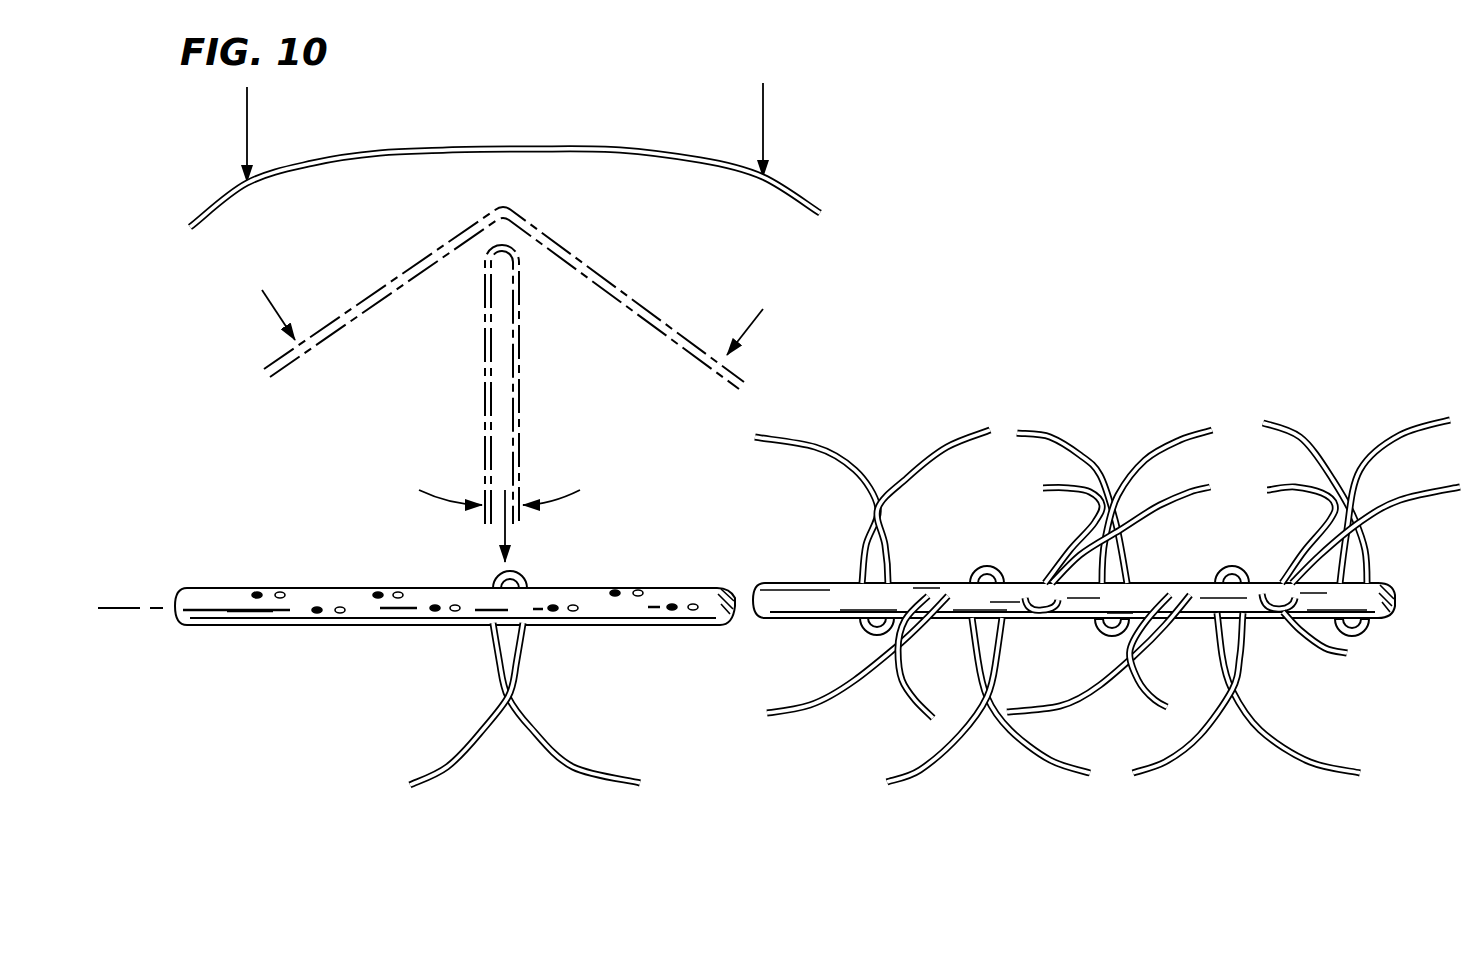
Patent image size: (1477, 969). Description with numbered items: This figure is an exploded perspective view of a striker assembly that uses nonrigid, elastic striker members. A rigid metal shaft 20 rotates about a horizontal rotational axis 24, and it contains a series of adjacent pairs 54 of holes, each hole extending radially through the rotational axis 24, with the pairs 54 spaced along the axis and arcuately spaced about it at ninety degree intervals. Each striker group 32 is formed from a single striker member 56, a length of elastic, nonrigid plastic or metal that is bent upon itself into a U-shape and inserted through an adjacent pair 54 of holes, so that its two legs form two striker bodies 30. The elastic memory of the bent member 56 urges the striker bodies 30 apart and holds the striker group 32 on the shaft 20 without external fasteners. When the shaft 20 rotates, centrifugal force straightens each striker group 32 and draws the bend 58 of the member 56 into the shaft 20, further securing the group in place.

The shaft 20 is at (685, 585).
The rotational axis 24 is at (120, 610).
The striker bodies 30 is at (463, 760).
The striker groups 32 is at (528, 778).
The pairs of holes 54 is at (273, 582).
The striker member 56 is at (532, 150).
The bend 58 is at (500, 577).